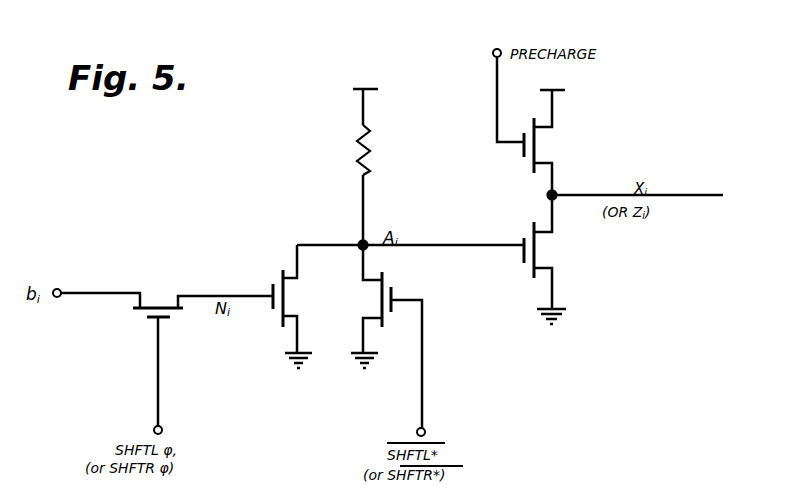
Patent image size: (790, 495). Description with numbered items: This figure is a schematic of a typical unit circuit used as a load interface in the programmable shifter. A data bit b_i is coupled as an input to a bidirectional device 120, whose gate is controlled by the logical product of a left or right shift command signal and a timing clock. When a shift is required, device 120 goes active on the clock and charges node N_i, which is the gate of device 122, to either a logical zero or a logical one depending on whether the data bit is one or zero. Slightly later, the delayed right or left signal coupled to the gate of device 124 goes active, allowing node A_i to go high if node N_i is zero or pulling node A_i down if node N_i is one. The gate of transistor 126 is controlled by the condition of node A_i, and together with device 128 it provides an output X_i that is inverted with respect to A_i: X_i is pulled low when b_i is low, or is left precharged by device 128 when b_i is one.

The bidirectional device 120 is at (140, 316).
The device 122 is at (278, 277).
The device 124 is at (389, 276).
The transistor 126 is at (530, 234).
The device 128 is at (532, 160).